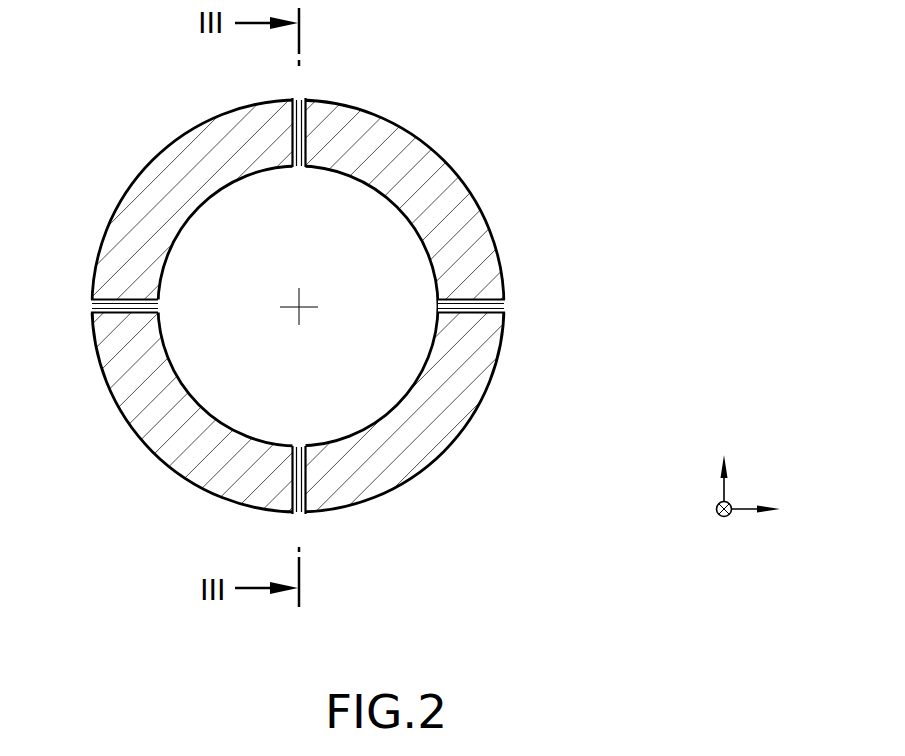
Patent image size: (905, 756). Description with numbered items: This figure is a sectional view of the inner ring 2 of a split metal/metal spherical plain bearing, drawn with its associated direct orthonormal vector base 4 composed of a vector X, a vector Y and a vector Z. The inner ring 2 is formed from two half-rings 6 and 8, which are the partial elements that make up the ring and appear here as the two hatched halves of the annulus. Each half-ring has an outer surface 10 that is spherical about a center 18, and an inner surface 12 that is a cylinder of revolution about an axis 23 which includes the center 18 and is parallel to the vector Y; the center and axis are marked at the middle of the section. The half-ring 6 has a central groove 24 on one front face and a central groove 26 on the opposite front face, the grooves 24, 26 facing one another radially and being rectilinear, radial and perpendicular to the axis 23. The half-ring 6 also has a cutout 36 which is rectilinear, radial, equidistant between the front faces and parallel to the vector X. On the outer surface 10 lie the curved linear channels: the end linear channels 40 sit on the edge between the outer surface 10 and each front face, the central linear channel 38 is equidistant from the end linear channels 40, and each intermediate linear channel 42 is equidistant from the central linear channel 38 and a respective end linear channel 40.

The inner ring 2 is at (309, 307).
The direct orthonormal vector base 4 is at (772, 454).
The half-ring 6 is at (106, 204).
The half-ring 8 is at (497, 206).
The outer surface 10 is at (98, 257).
The inner surface 12 is at (164, 344).
The center 18 is at (258, 325).
The axis 23 is at (298, 307).
The central groove 24 is at (303, 152).
The central groove 26 is at (303, 472).
The cutout 36 is at (122, 313).
The central linear channel 38 is at (93, 306).
The end linear channel 40 is at (296, 99).
The intermediate linear channel 42 is at (154, 163).